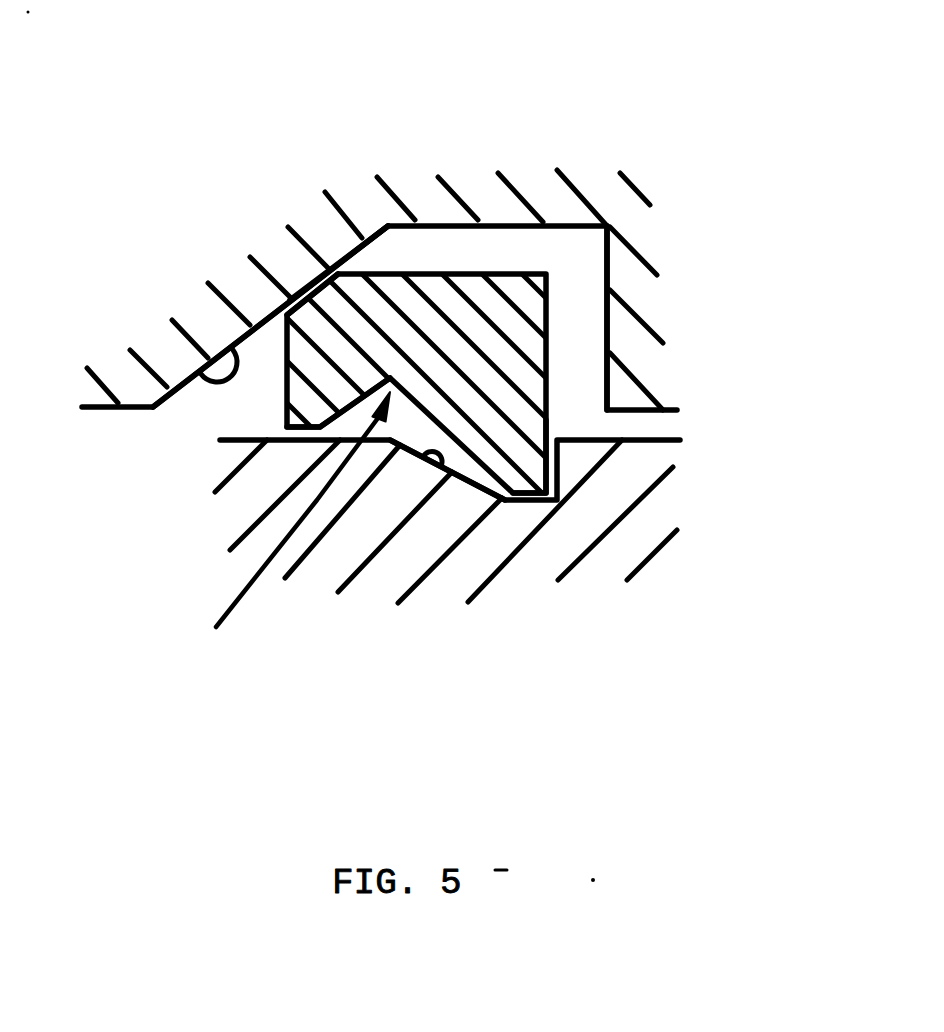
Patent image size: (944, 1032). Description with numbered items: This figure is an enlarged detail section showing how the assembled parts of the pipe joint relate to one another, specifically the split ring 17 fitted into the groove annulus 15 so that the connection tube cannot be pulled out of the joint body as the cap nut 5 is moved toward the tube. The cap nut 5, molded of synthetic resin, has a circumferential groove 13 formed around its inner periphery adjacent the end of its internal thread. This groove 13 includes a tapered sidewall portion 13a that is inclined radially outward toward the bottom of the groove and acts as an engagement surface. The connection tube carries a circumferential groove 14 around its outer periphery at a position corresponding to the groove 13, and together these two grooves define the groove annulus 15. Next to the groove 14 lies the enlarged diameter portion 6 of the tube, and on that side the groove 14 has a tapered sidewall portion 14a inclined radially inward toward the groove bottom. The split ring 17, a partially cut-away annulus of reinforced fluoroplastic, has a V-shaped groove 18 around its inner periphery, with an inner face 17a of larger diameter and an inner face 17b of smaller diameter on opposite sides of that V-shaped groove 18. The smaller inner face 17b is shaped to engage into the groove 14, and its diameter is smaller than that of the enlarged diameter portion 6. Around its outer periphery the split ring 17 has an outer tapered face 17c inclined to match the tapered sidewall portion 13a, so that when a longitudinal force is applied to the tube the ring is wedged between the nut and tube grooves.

The cap nut 5 is at (327, 243).
The enlarged diameter portion 6 is at (602, 498).
The circumferential groove 13 is at (462, 253).
The tapered sidewall portion 13a is at (200, 377).
The circumferential groove 14 is at (467, 477).
The tapered sidewall portion 14a is at (438, 472).
The groove annulus 15 is at (573, 282).
The split ring 17 is at (526, 344).
The inner face of larger diameter 17a is at (300, 427).
The inner face of smaller diameter 17b is at (531, 500).
The outer tapered face 17c is at (326, 292).
The V-shaped groove 18 is at (275, 525).